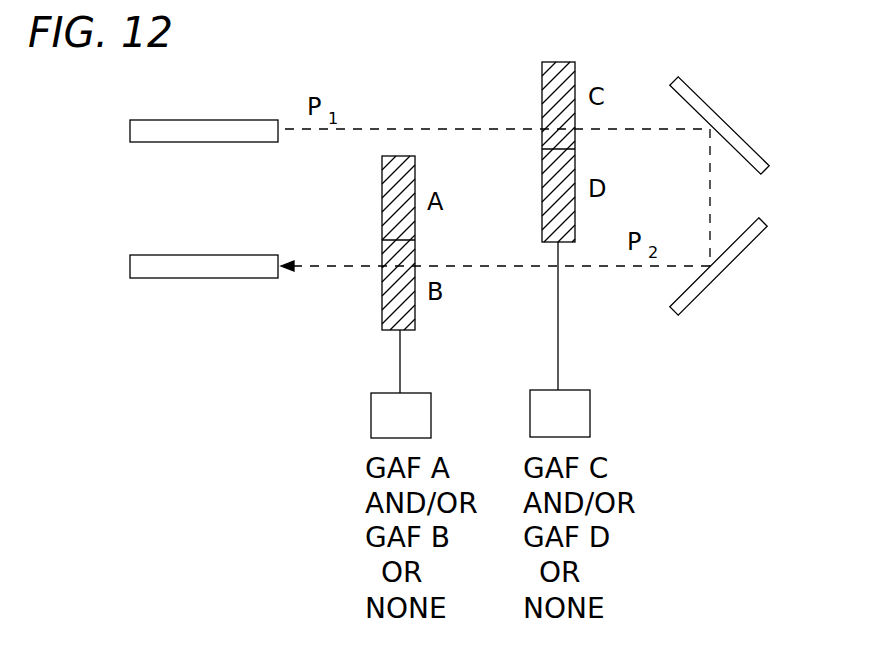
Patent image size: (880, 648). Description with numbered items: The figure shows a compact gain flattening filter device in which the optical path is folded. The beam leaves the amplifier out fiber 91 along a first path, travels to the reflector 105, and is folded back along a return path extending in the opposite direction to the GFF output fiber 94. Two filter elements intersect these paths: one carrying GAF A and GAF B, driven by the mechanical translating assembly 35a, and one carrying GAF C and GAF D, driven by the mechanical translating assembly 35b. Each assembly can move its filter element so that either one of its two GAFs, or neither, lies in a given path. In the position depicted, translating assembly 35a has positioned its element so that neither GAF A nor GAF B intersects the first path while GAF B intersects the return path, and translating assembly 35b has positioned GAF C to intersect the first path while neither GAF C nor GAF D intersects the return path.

The amplifier out fiber 91 is at (206, 118).
The GFF output fiber 94 is at (212, 253).
The mechanical translating assembly 35a is at (373, 392).
The mechanical translating assembly 35b is at (534, 366).
The reflector 105 is at (768, 172).